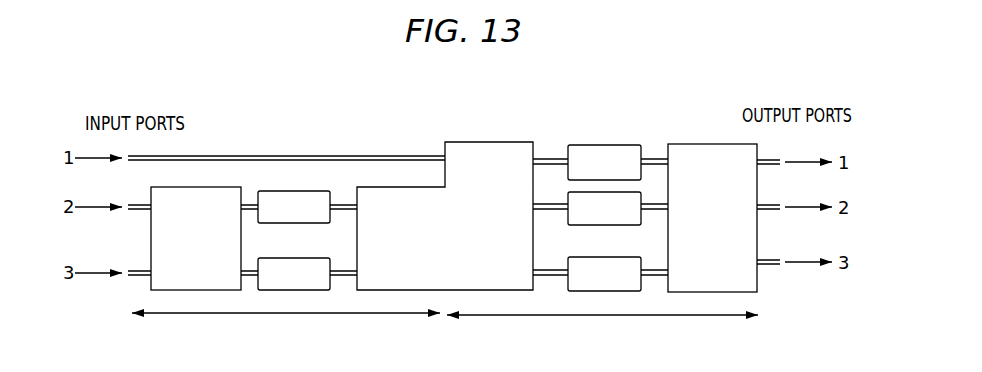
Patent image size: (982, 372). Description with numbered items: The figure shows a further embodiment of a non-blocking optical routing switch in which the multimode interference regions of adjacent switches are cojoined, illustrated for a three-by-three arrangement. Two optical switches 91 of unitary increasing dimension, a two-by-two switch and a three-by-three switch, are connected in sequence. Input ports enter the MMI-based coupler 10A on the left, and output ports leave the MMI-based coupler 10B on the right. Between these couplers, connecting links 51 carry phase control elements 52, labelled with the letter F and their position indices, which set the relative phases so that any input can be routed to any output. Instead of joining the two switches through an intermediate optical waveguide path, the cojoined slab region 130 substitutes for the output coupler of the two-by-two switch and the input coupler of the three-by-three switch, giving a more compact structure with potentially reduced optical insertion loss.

The MMI-based coupler 10A is at (208, 247).
The MMI-based coupler 10B is at (723, 227).
The cojoined slab region 130 is at (457, 246).
The phase control element 52 is at (295, 191).
The connecting link 51 is at (551, 157).
The optical switch 91 is at (445, 328).